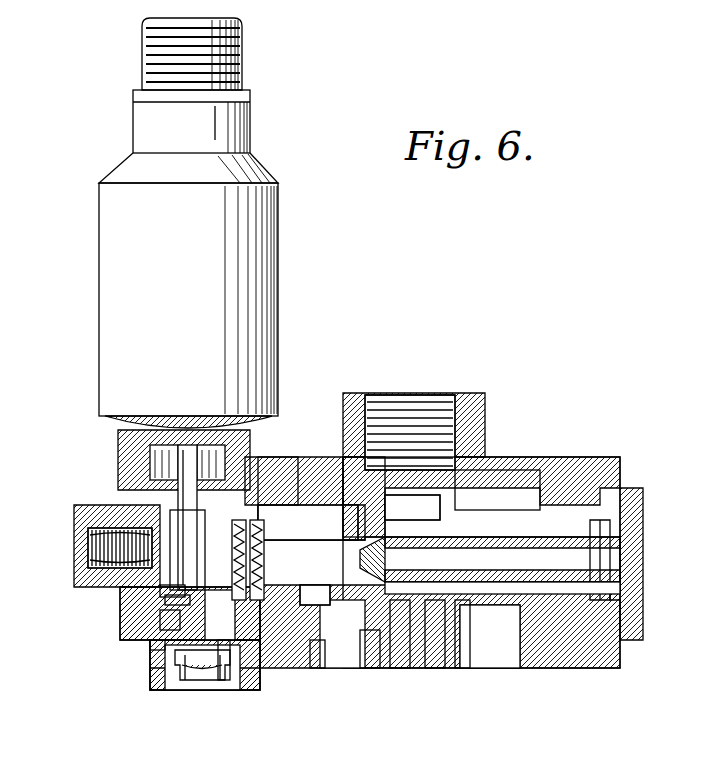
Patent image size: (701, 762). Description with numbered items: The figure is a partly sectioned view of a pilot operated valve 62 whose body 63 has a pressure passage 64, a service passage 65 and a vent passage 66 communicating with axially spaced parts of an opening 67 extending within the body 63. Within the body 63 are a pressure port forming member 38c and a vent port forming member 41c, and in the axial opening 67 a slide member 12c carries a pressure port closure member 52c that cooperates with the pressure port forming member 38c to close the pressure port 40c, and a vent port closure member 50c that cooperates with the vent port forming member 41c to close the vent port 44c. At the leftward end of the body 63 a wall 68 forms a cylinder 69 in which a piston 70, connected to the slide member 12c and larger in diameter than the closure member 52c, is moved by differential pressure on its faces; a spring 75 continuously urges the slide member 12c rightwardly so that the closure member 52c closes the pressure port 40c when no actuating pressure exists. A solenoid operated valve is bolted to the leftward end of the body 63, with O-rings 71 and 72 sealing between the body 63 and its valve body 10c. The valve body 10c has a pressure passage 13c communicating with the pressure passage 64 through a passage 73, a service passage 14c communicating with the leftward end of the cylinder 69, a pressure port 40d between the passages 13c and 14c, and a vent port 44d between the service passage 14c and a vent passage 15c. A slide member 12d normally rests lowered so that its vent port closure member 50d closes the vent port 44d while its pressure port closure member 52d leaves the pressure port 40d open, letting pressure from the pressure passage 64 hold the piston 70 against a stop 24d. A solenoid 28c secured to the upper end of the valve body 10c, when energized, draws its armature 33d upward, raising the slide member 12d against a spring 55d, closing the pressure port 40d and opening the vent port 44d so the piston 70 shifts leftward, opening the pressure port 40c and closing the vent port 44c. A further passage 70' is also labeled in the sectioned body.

The solenoid 28c is at (125, 250).
The armature 33d is at (170, 432).
The spring 55d is at (208, 432).
The slide member 12d is at (187, 526).
The wall 68 is at (265, 478).
The opening 67 is at (338, 492).
The cylinder 69 is at (282, 490).
The stop 24d is at (348, 510).
The service passage 65 is at (447, 432).
The body 63 is at (520, 480).
The pilot operated valve 62 is at (580, 458).
The vent port forming member 41c is at (468, 492).
The pressure port forming member 38c is at (380, 508).
The slide member 12c is at (412, 568).
The vent passage 66 is at (505, 640).
The pressure passage 64 is at (332, 640).
The passage 70' is at (324, 598).
The O-ring 71 is at (325, 655).
The pressure port closure member 52c is at (368, 655).
The pressure port 40c is at (400, 640).
The vent port 44c is at (437, 640).
The vent port closure member 50c is at (466, 640).
The vent passage 15c is at (110, 540).
The vent port closure member 50d is at (155, 553).
The valve body 10c is at (170, 615).
The vent port 44d is at (175, 590).
The service passage 14c is at (185, 598).
The pressure port 40d is at (175, 620).
The piston 70 is at (119, 668).
The pressure port closure member 52d is at (160, 665).
The pressure passage 13c is at (197, 665).
The spring 75 is at (226, 680).
The O-ring 72 is at (242, 665).
The passage 73 is at (266, 660).